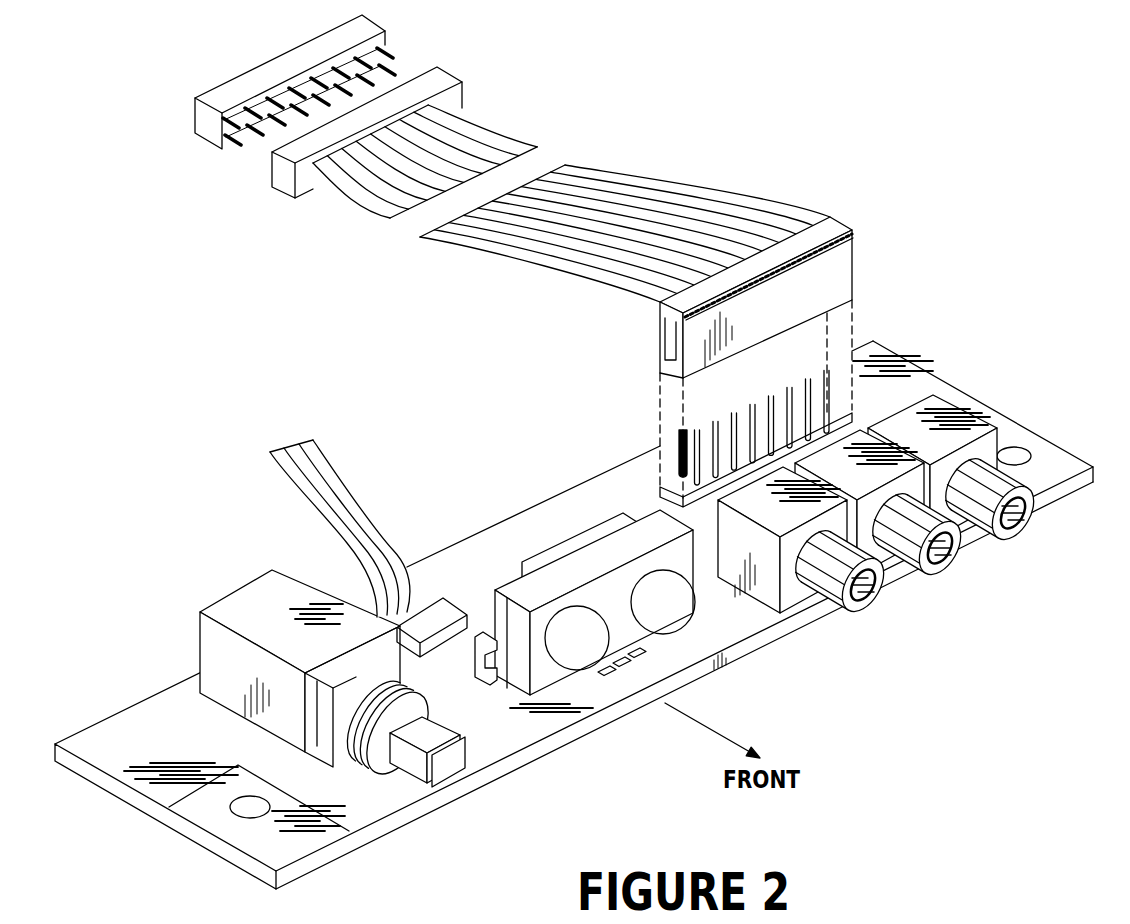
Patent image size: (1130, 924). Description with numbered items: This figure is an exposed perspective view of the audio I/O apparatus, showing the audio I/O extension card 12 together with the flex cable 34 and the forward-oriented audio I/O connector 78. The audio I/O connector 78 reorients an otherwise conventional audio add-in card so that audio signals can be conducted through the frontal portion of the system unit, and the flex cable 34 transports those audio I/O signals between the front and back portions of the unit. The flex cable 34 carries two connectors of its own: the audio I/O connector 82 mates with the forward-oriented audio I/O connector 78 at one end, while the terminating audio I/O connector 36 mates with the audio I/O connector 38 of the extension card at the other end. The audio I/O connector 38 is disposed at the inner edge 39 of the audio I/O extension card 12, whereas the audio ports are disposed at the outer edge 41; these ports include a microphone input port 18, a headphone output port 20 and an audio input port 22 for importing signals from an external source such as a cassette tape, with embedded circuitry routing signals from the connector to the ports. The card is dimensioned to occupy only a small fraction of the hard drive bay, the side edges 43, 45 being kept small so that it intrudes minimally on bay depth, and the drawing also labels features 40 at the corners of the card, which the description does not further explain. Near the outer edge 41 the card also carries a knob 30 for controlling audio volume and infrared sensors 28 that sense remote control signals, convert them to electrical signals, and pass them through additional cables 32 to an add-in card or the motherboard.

The audio I/O extension card 12 is at (947, 355).
The microphone input port 18 is at (875, 603).
The headphone output port 20 is at (952, 567).
The audio input port 22 is at (1025, 533).
The infrared sensors 28 is at (573, 678).
The knob 30 is at (470, 783).
The additional cables 32 is at (353, 492).
The flex cable 34 is at (487, 118).
The audio I/O connector 36 is at (837, 227).
The audio I/O connector 38 is at (679, 441).
The inner edge 39 is at (538, 504).
The mounting hole 40 is at (263, 839).
The outer edge 41 is at (775, 633).
The side edge 43 is at (108, 788).
The side edge 45 is at (988, 403).
The audio I/O connector 78 is at (207, 143).
The audio I/O connector 82 is at (447, 68).